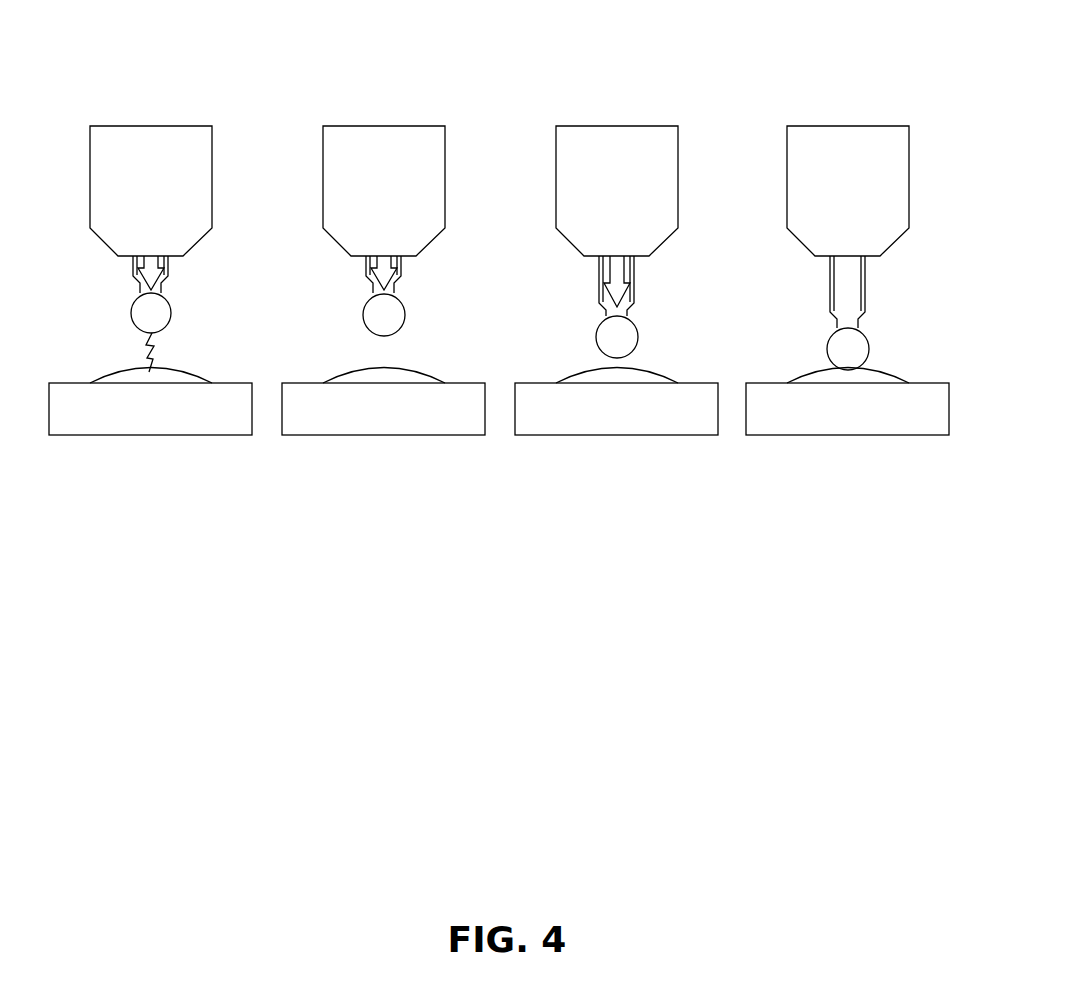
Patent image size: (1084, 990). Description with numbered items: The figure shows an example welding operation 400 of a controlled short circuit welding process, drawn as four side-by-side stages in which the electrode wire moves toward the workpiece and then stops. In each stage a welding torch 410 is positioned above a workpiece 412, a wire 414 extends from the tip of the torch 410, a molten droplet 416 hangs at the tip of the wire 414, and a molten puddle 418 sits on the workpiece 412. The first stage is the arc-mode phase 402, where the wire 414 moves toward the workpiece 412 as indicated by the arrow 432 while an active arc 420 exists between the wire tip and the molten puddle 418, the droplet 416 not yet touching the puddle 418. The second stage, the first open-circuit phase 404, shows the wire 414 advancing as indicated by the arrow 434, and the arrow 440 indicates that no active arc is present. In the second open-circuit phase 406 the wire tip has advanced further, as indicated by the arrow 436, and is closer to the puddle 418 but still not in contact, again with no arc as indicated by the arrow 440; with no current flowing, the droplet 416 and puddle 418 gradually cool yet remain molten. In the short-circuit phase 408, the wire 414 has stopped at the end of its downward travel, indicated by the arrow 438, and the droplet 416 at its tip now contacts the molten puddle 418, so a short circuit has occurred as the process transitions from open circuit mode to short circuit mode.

The welding process phases 400 is at (512, 73).
The Phase 1-C (P1-C) 402 is at (151, 458).
The Phase 2-A (P2-A) 404 is at (388, 607).
The Phase 2-B (P2-B) 406 is at (621, 607).
The Phase 3-A (P3-A) 408 is at (850, 607).
The welding torch 410 is at (120, 126).
The workpiece 412 is at (115, 437).
The wire 414 is at (133, 271).
The molten droplet 416 is at (173, 317).
The molten puddle 418 is at (173, 368).
The arc 420 is at (123, 363).
The arrow 432 is at (151, 245).
The arrow 434 is at (383, 227).
The arrow 436 is at (616, 227).
The wire feed direction arrow 438 is at (845, 237).
The arrow 440 is at (553, 318).